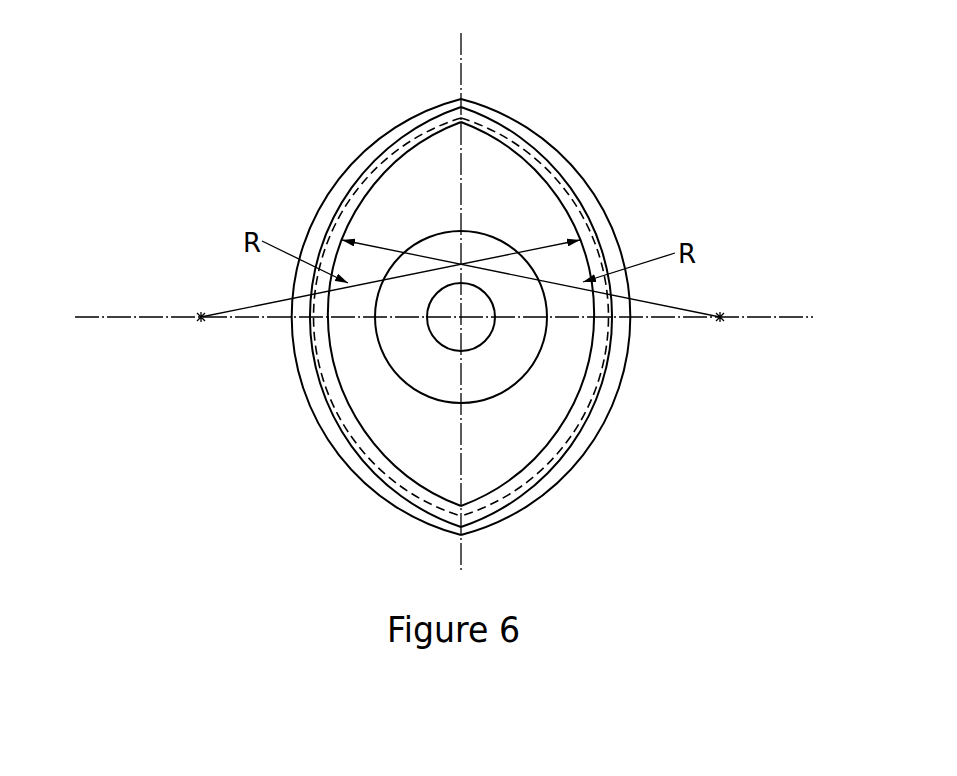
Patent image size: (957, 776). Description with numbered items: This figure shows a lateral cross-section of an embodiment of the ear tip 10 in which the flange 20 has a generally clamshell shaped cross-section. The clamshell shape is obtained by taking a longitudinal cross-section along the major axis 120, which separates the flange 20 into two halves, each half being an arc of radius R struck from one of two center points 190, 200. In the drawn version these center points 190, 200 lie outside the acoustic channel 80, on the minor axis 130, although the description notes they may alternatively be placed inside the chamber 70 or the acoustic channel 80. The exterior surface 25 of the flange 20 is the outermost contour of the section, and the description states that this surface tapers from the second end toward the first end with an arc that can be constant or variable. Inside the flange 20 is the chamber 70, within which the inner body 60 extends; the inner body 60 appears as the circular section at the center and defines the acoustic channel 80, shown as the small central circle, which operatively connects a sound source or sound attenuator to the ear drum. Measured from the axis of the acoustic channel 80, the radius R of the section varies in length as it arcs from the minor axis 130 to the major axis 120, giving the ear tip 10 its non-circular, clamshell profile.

The ear tip 10 is at (683, 144).
The annular flange 20 is at (543, 145).
The exterior surface 25 is at (627, 318).
The inner body 60 is at (519, 343).
The chamber 70 is at (520, 432).
The acoustic channel 80 is at (448, 331).
The major axis 120 is at (460, 53).
The minor axis 130 is at (788, 315).
The center point 190 is at (201, 319).
The center point 200 is at (721, 319).